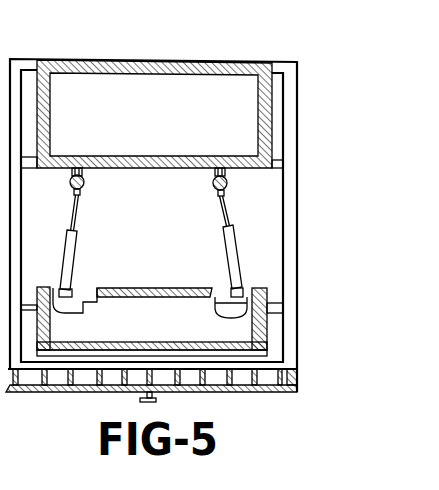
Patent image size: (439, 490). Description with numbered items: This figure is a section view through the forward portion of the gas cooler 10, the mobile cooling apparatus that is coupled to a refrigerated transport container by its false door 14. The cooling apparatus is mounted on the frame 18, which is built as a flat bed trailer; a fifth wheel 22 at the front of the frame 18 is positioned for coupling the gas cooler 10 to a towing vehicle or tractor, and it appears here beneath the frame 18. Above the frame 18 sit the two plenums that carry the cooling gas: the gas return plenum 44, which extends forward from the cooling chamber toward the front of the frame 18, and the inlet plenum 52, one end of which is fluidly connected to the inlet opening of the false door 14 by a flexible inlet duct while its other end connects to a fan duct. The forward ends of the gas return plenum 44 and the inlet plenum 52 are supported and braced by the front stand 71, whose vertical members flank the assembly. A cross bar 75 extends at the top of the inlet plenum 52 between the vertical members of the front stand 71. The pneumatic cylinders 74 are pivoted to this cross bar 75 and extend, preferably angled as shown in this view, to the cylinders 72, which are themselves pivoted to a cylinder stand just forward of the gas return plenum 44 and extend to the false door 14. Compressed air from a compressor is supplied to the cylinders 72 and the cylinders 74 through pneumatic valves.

The gas cooler 10 is at (255, 33).
The false door 14 is at (159, 241).
The frame 18 is at (296, 392).
The fifth wheel 22 is at (156, 400).
The gas return plenum 44 is at (189, 32).
The inlet plenum 52 is at (180, 283).
The front stand 71 is at (47, 228).
The cylinders 72 is at (212, 183).
The cylinders 74 is at (110, 230).
The cross bar 75 is at (104, 270).